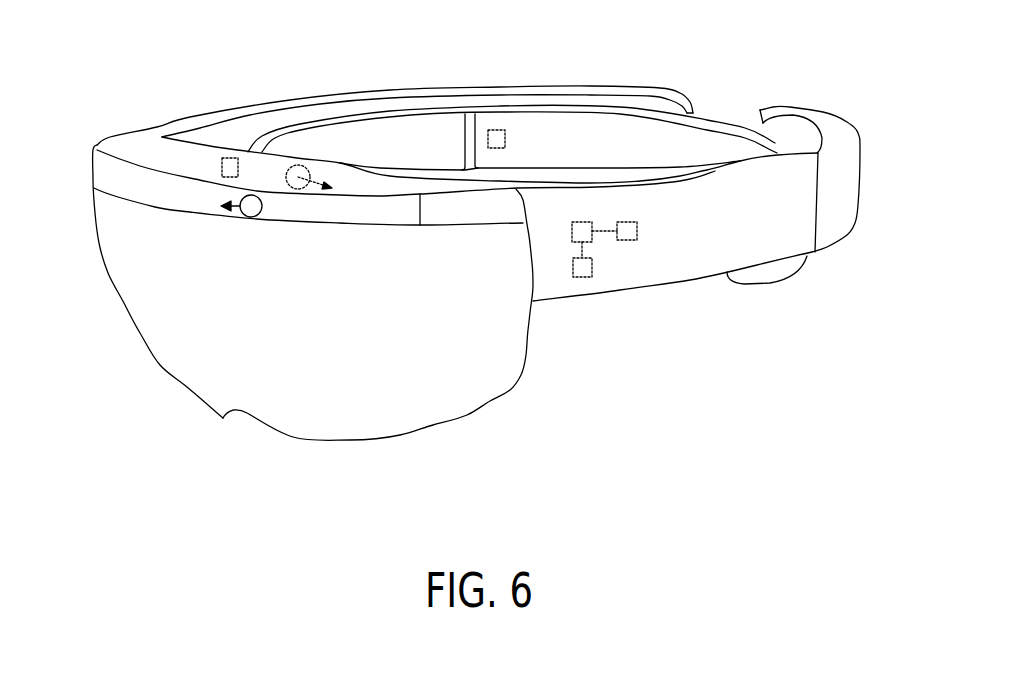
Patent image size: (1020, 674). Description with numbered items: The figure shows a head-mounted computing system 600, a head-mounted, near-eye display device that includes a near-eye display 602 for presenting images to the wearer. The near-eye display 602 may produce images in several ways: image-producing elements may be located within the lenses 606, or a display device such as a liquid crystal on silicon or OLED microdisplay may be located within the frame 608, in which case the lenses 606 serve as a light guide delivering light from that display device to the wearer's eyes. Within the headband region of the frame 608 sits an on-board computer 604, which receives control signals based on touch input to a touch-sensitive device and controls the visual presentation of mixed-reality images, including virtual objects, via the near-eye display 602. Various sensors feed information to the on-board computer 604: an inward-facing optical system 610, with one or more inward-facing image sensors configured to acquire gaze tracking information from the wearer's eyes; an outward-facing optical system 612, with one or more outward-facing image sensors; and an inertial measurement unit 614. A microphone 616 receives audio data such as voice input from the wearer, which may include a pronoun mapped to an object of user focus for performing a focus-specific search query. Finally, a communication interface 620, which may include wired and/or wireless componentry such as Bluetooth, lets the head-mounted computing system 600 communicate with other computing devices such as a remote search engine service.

The head-mounted computing system 600 is at (690, 45).
The near-eye display 602 is at (114, 320).
The on-board computer 604 is at (580, 222).
The lenses 606 is at (185, 383).
The frame 608 is at (711, 278).
The inward-facing optical system 610 is at (508, 142).
The outward-facing optical system 612 is at (250, 217).
The inertial measurement unit 614 is at (638, 230).
The microphone 616 is at (219, 170).
The communication interface 620 is at (592, 270).